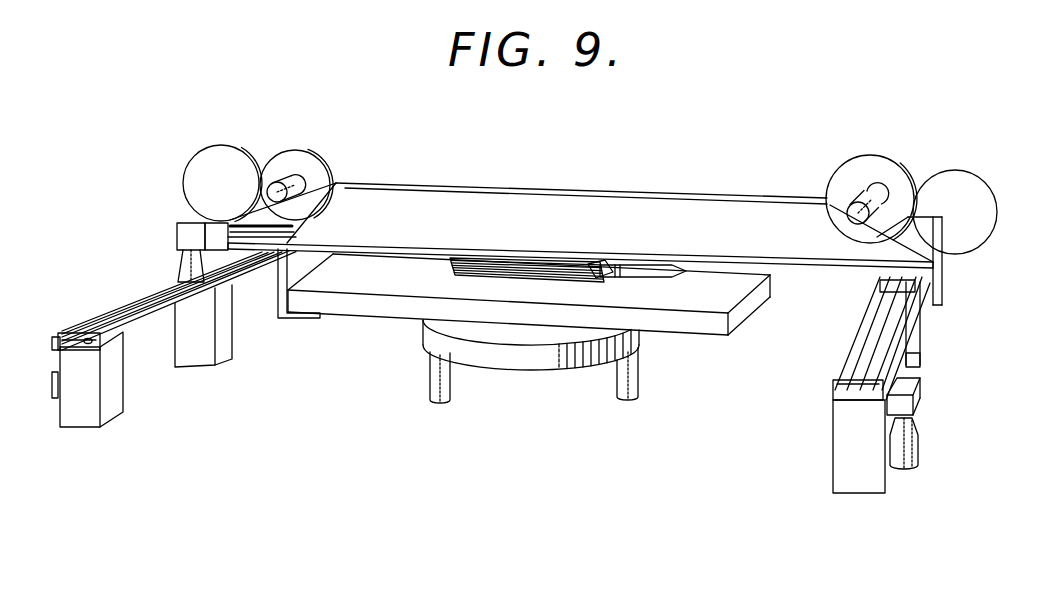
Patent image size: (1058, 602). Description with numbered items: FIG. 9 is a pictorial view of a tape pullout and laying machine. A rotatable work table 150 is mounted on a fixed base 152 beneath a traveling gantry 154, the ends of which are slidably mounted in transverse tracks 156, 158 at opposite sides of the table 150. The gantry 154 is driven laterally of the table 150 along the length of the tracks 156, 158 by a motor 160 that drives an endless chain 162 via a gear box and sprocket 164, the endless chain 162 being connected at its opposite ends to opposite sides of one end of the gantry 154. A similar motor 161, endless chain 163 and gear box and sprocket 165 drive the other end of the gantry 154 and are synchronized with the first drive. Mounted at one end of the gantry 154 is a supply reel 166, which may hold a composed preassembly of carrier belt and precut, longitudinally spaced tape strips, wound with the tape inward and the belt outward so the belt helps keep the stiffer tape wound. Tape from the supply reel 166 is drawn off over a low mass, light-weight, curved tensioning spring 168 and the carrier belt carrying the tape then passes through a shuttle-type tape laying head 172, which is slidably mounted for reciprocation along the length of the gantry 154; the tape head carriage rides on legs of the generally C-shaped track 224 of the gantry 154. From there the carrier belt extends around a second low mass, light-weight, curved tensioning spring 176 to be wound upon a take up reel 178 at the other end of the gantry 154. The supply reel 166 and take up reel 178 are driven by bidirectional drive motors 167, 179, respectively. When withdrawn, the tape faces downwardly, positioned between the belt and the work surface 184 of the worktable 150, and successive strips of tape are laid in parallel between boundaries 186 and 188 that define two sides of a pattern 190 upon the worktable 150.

The rotatable work table 150 is at (707, 333).
The fixed base 152 is at (548, 370).
The traveling gantry 154 is at (520, 165).
The transverse track 156 is at (143, 330).
The transverse track 158 is at (833, 388).
The motor 160 is at (918, 448).
The motor 161 is at (52, 400).
The endless chain 162 is at (882, 350).
The endless chain 163 is at (88, 338).
The gear box and sprocket 164 is at (920, 392).
The gear box and sprocket 165 is at (54, 335).
The supply reel 166 is at (306, 153).
The bidirectional drive motor 167 is at (283, 177).
The curved tensioning spring 168 is at (184, 178).
The tape laying head 172 is at (590, 262).
The curved tensioning spring 176 is at (926, 184).
The take up reel 178 is at (832, 187).
The bidirectional drive motor 179 is at (860, 200).
The surface 184 is at (742, 285).
The boundary 186 is at (593, 279).
The boundary 188 is at (450, 261).
The pattern 190 is at (455, 272).
The C-shaped track 224 is at (770, 266).